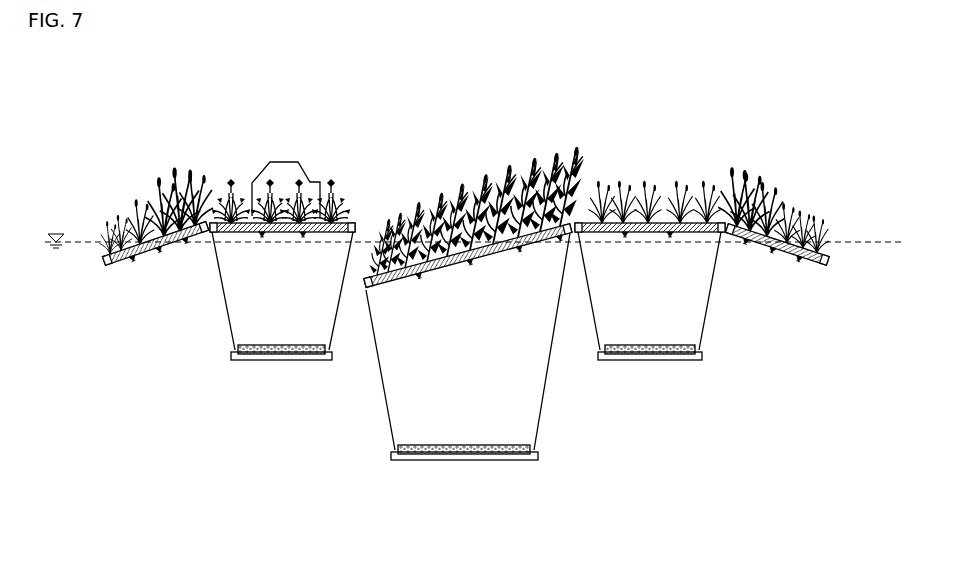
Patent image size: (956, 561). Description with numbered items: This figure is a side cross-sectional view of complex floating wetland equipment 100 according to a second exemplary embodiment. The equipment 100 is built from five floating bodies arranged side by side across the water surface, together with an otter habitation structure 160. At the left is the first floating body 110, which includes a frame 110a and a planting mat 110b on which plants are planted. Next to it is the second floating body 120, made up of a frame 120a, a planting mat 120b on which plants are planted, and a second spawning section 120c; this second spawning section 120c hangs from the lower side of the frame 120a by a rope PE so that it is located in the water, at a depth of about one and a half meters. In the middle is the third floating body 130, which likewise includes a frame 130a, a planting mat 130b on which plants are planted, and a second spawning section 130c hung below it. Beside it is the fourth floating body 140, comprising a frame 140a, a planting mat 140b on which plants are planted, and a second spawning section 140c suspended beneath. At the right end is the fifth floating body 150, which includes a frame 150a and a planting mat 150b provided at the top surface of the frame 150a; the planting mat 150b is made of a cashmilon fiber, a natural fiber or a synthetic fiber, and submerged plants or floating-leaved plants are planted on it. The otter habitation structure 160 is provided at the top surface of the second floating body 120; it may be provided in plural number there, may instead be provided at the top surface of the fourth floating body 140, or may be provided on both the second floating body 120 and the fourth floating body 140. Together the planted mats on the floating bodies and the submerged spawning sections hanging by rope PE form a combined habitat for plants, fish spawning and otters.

The complex floating wetland equipment 100 is at (593, 57).
The first floating body 110 is at (151, 222).
The frame 110a is at (144, 262).
The planting mat 110b is at (117, 268).
The second floating body 120 is at (254, 260).
The frame 120a is at (232, 236).
The planting mat 120b is at (213, 240).
The second spawning section 120c is at (262, 362).
The third floating body 130 is at (474, 321).
The frame 130a is at (493, 250).
The planting mat 130b is at (536, 244).
The second spawning section 130c is at (464, 462).
The fourth floating body 140 is at (676, 269).
The frame 140a is at (699, 237).
The planting mat 140b is at (714, 236).
The second spawning section 140c is at (648, 362).
The fifth floating body 150 is at (780, 228).
The frame 150a is at (788, 254).
The planting mat 150b is at (815, 262).
The otter habitation structure 160 is at (289, 162).
The rope PE is at (223, 308).